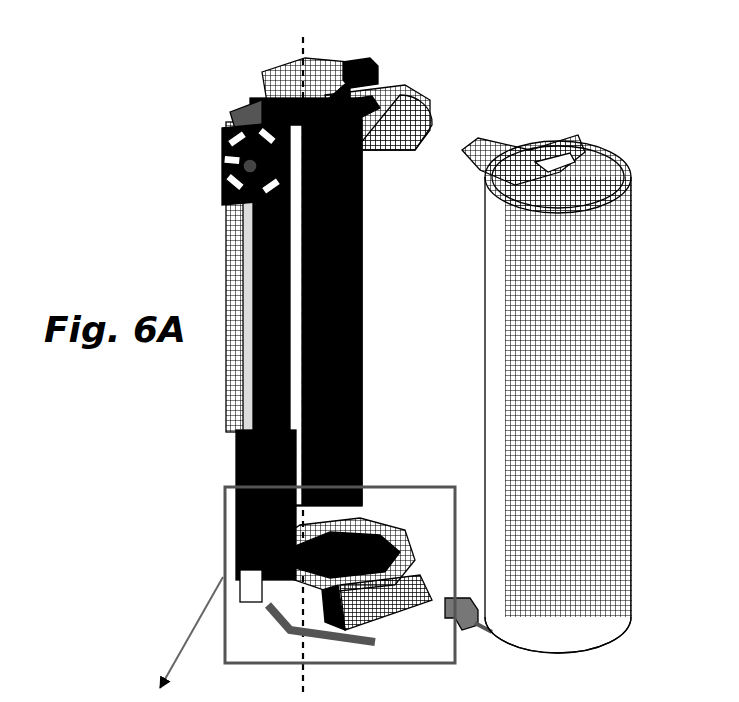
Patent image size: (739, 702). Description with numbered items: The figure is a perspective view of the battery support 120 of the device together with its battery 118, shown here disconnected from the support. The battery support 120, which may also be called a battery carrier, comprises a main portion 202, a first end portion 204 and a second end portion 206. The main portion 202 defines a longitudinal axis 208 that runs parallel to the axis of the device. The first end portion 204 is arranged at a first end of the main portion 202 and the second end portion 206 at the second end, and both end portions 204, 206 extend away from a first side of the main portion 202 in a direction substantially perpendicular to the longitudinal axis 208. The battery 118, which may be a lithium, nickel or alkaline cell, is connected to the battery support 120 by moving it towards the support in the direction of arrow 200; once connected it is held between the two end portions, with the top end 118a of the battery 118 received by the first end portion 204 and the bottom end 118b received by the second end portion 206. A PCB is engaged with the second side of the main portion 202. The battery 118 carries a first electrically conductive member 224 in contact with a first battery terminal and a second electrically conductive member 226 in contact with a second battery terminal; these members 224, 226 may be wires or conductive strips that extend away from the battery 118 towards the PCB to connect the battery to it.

The battery 118 is at (574, 388).
The top end of the battery 118a is at (600, 157).
The bottom end of the battery 118b is at (612, 640).
The battery support 120 is at (362, 238).
The arrow 200 is at (333, 353).
The main portion 202 is at (264, 124).
The first end portion 204 is at (352, 78).
The second end portion 206 is at (300, 592).
The longitudinal axis 208 is at (304, 50).
The first electrically conductive member 224 is at (522, 140).
The second electrically conductive member 226 is at (468, 628).